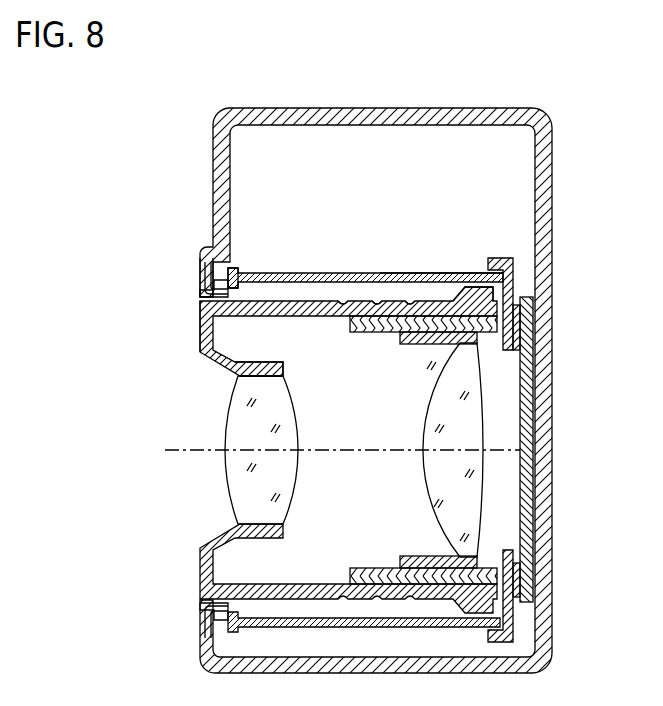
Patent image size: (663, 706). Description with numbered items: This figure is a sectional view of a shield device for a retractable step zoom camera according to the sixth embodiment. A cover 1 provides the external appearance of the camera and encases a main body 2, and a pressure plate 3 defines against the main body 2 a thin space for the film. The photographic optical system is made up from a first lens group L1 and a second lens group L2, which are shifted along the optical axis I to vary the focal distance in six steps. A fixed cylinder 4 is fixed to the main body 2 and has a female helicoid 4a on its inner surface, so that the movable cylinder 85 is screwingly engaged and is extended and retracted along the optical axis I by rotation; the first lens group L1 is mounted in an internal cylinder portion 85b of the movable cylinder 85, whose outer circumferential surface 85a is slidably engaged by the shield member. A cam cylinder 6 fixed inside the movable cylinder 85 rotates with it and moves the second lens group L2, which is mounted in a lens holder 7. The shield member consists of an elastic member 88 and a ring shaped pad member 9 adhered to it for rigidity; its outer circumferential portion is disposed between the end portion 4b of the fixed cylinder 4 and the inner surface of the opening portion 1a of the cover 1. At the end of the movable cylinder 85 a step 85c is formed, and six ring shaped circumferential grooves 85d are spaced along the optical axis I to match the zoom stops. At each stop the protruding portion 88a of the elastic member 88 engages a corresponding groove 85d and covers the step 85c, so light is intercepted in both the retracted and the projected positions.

The cover 1 is at (370, 117).
The opening portion 1a is at (200, 293).
The main body 2 is at (510, 280).
The pressure plate 3 is at (523, 358).
The fixed cylinder 4 is at (262, 272).
The female helicoid 4a is at (422, 290).
The end portion 4b is at (220, 265).
The cam cylinder 6 is at (382, 333).
The lens holder 7 is at (486, 387).
The pad member 9 is at (202, 262).
The movable cylinder 85 is at (205, 360).
The projection of lens barrel 85a is at (470, 292).
The front wall of lens barrel 85b is at (268, 361).
The step 85c is at (195, 308).
The circumferential grooves 85d is at (410, 298).
The elastic member 88 is at (209, 285).
The protruding portion 88a is at (199, 292).
The first lens group L1 is at (237, 423).
The second lens group L2 is at (423, 481).
The optical axis I is at (186, 455).